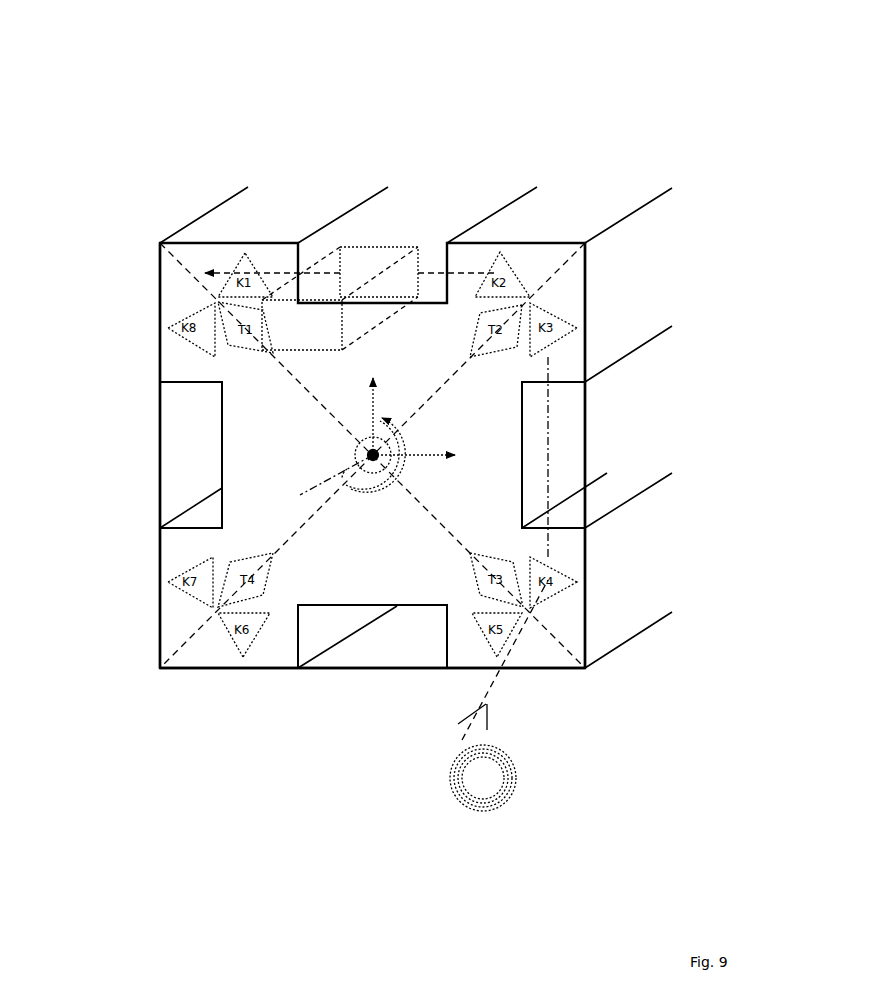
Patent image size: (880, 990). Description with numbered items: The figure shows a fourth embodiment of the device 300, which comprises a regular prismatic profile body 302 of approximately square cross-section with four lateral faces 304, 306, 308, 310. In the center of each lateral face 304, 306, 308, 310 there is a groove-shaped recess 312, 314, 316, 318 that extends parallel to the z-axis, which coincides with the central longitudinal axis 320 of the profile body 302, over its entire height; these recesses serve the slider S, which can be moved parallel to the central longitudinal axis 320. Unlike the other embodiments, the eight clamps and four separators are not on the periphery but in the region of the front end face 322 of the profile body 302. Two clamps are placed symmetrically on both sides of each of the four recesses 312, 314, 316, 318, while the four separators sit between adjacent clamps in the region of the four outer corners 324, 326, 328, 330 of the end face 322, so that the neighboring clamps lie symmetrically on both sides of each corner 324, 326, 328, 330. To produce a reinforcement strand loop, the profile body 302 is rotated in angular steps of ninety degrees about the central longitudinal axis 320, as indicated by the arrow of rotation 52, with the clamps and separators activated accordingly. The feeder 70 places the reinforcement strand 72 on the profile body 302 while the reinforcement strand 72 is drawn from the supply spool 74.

The device 300 is at (545, 88).
The profile body 302 is at (293, 413).
The lateral face 304 is at (265, 212).
The lateral face 306 is at (628, 572).
The lateral face 308 is at (230, 674).
The lateral face 310 is at (156, 292).
The recess 312 is at (350, 268).
The recess 314 is at (570, 398).
The recess 316 is at (400, 635).
The recess 318 is at (190, 400).
The central longitudinal axis 320 is at (365, 452).
The end face 322 is at (340, 567).
The outer corner 324 is at (160, 243).
The outer corner 326 is at (586, 242).
The outer corner 328 is at (586, 668).
The outer corner 330 is at (160, 668).
The arrow of rotation 52 is at (382, 453).
The feeder 70 is at (512, 812).
The reinforcement strand 72 is at (497, 683).
The supply spool 74 is at (483, 778).